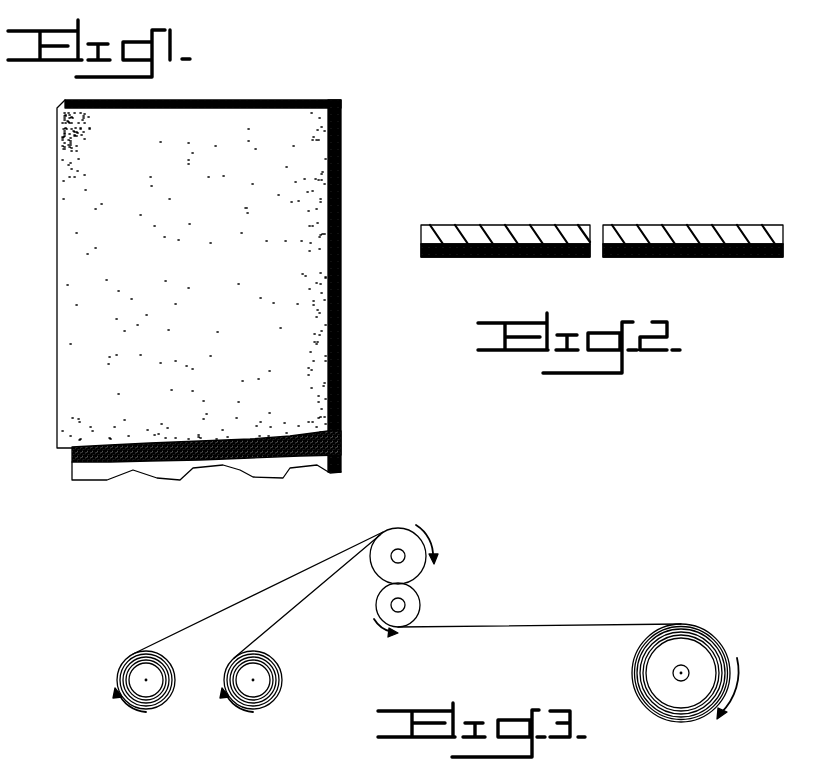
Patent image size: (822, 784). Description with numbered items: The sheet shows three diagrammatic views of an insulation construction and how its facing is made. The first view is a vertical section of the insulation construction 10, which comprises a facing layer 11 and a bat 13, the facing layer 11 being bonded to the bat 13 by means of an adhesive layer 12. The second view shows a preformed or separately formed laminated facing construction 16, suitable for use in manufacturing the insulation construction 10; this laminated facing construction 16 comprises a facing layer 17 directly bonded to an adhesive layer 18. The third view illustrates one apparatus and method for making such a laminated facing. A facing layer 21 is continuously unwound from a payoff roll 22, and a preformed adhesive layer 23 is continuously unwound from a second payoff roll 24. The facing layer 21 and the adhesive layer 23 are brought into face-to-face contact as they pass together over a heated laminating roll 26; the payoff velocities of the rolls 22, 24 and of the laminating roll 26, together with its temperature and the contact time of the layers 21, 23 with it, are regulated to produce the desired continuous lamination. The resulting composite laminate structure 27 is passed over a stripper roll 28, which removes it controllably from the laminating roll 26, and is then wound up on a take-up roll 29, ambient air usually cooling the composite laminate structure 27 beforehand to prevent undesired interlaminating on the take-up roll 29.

In FIG. 1, the insulation construction 10 is at (240, 306).
In FIG. 1, the facing layer 11 is at (155, 479).
In FIG. 1, the adhesive layer 12 is at (330, 456).
In FIG. 1, the bat 13 is at (300, 336).
In FIG. 2, the laminated facing construction 16 is at (583, 242).
In FIG. 2, the facing layer 17 is at (534, 226).
In FIG. 2, the adhesive layer 18 is at (545, 258).
In FIG. 3, the facing layer 21 is at (207, 618).
In FIG. 3, the payoff roll 22 is at (152, 710).
In FIG. 3, the preformed adhesive layer 23 is at (281, 619).
In FIG. 3, the payoff roll 24 is at (268, 702).
In FIG. 3, the heated laminating roll 26 is at (398, 524).
In FIG. 3, the composite laminate structure 27 is at (528, 625).
In FIG. 3, the stripper roll 28 is at (420, 601).
In FIG. 3, the take-up roll 29 is at (668, 718).